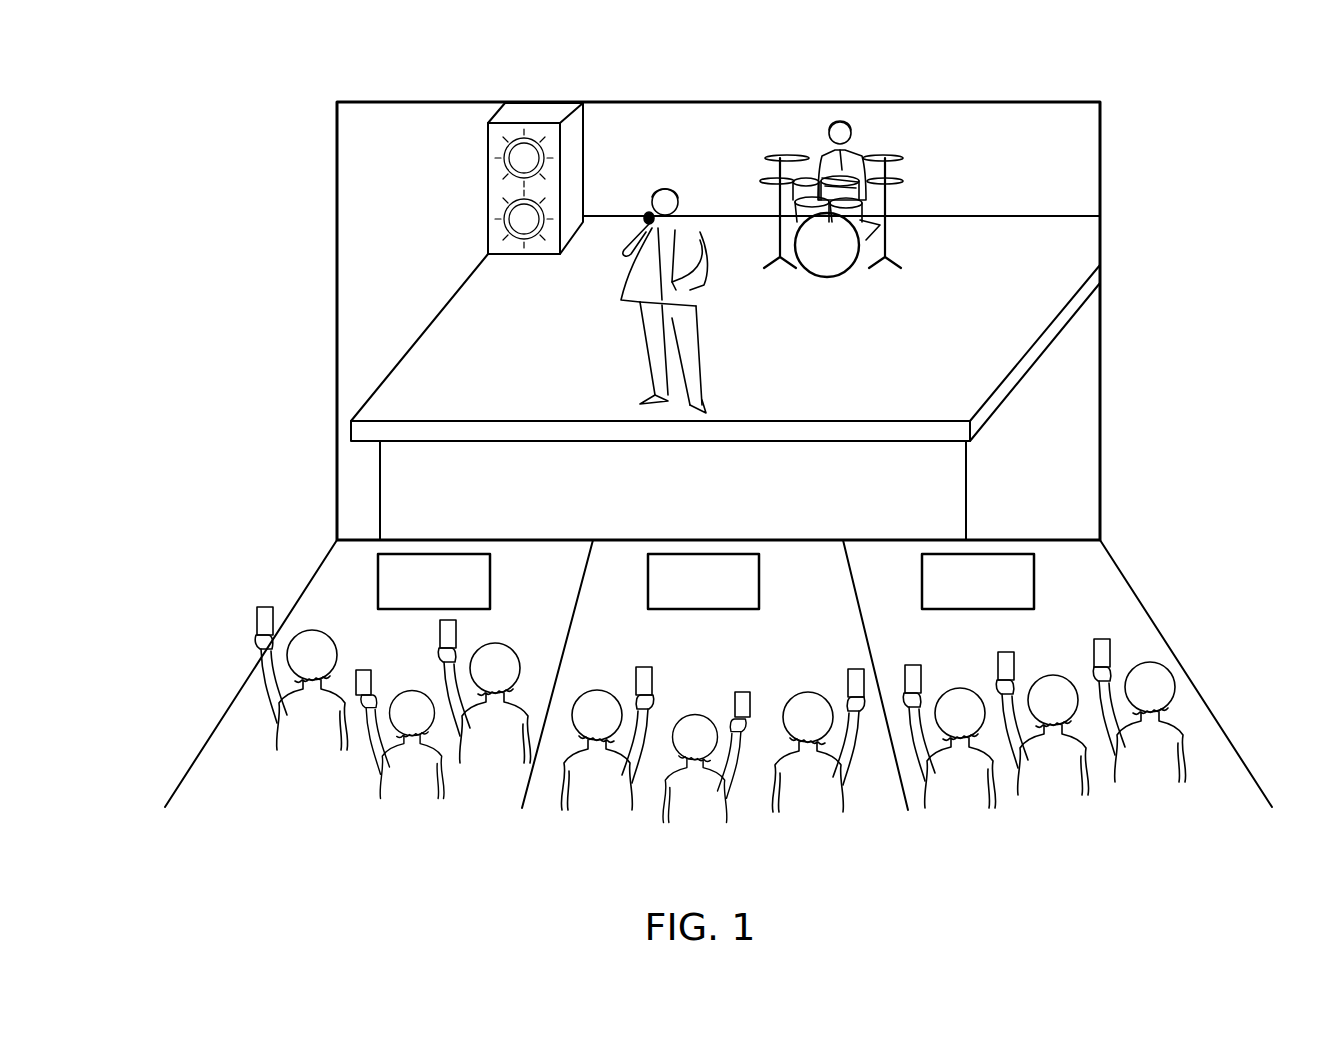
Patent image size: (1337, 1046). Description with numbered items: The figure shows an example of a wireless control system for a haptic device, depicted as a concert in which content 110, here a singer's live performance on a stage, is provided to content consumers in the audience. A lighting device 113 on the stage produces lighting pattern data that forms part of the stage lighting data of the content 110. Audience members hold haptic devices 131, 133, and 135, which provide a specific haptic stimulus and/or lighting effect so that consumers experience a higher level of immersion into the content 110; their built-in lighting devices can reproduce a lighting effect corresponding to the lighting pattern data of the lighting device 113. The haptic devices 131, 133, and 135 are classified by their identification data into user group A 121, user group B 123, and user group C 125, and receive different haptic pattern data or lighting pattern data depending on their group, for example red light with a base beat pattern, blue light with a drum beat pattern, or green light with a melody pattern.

The content 110 is at (1100, 318).
The lighting device 113 is at (533, 140).
The user group A 121 is at (490, 580).
The user group B 123 is at (759, 580).
The user group C 125 is at (1034, 580).
The haptic device 131 is at (268, 605).
The haptic device 133 is at (647, 666).
The haptic device 135 is at (912, 666).